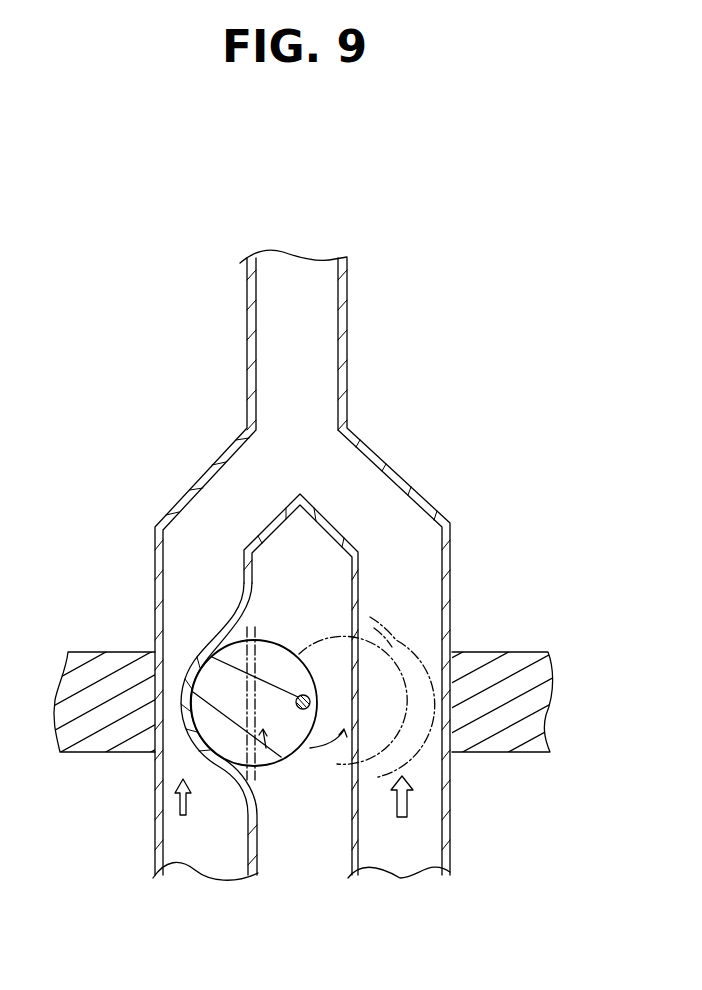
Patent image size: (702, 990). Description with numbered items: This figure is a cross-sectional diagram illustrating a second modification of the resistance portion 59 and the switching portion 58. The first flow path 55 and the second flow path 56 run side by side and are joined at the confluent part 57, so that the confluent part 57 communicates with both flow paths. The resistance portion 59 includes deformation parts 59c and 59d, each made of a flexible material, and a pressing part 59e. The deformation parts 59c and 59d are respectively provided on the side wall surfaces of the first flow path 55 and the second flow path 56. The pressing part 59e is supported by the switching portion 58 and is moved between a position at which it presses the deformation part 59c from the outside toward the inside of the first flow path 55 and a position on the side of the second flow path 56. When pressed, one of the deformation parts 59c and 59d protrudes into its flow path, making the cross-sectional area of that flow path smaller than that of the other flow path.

The first flow path 55 is at (183, 860).
The second flow path 56 is at (440, 860).
The confluent part 57 is at (260, 275).
The switching portion 58 is at (298, 709).
The resistance portion 59 is at (198, 578).
The deformation part 59c is at (198, 658).
The deformation part 59d is at (362, 667).
The pressing part 59e is at (267, 638).